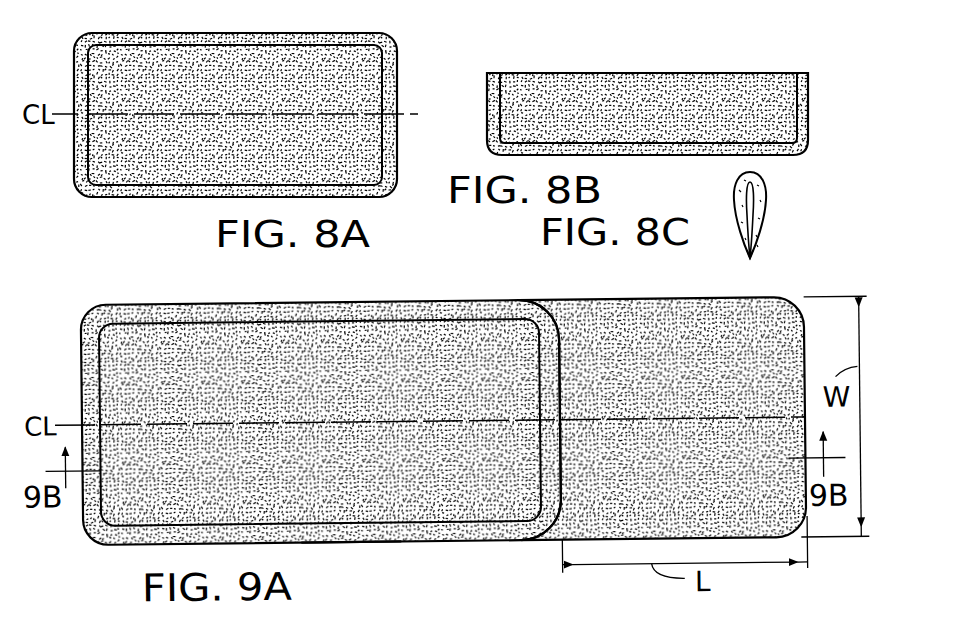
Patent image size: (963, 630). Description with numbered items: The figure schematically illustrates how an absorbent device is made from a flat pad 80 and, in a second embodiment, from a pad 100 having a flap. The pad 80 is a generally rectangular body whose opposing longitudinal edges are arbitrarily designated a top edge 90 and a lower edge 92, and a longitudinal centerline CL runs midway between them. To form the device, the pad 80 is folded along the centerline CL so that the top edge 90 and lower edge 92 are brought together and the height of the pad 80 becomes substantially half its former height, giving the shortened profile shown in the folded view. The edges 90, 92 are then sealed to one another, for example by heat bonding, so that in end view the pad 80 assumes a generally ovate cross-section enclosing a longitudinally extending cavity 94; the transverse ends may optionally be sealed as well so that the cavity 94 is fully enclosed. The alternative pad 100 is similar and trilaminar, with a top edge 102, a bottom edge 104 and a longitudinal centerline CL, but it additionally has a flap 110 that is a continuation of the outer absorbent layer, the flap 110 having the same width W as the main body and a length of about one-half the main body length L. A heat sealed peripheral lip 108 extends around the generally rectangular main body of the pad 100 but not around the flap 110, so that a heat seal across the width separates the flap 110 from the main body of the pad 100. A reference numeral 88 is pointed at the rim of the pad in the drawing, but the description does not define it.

In FIG. 8A, the pad 80 is at (406, 37).
In FIG. 8B, the pad 80 is at (752, 62).
In FIG. 8A, the peripheral rim 88 is at (391, 80).
In FIG. 8B, the peripheral rim 88 is at (801, 110).
In FIG. 8A, the top edge 90 is at (190, 33).
In FIG. 8C, the top edge 90 is at (745, 253).
In FIG. 8A, the lower edge 92 is at (167, 198).
In FIG. 8B, the lower edge 92 is at (633, 156).
In FIG. 8C, the lower edge 92 is at (758, 256).
In FIG. 8C, the cavity 94 is at (756, 211).
In FIG. 9A, the pad 100 is at (474, 408).
In FIG. 9A, the top edge 102 is at (345, 302).
In FIG. 9A, the bottom edge 104 is at (345, 543).
In FIG. 9A, the heat sealed peripheral lip 108 is at (426, 529).
In FIG. 9A, the flap 110 is at (772, 362).